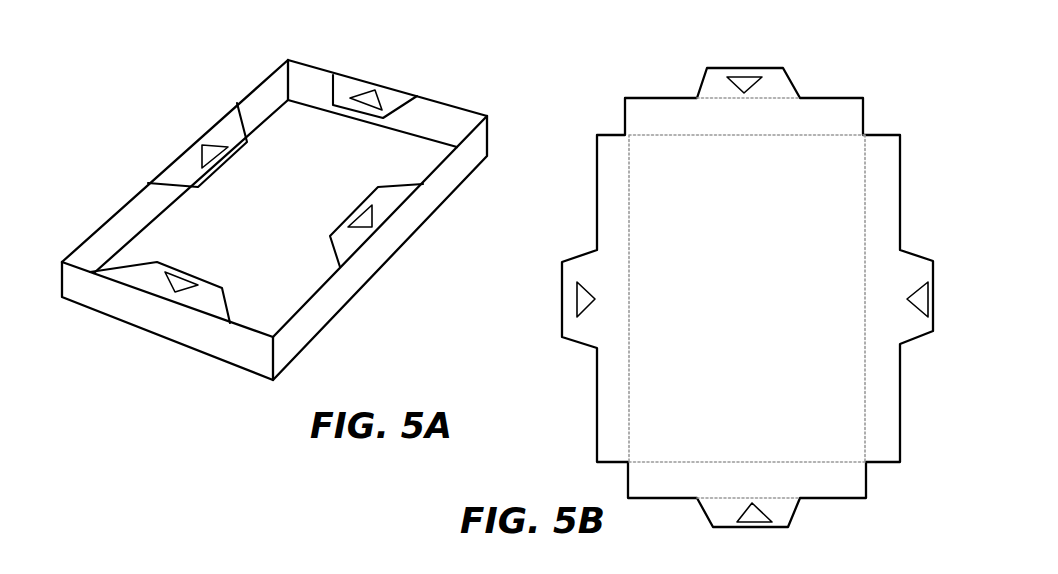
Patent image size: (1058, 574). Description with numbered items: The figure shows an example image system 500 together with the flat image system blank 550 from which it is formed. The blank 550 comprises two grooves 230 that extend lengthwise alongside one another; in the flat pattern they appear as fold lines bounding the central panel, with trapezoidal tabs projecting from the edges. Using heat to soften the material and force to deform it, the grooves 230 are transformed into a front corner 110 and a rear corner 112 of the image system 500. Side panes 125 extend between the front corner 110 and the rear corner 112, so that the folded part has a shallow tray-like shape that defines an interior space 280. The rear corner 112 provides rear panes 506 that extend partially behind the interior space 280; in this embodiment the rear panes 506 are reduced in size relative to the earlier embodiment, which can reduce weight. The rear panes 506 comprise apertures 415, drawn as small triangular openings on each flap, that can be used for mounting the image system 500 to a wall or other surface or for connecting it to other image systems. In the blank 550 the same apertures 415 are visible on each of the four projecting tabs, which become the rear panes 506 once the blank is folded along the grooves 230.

In FIG. 5A, the image system 500 is at (218, 50).
In FIG. 5B, the image system blank 550 is at (672, 50).
In FIG. 5A, the interior space 280 is at (382, 164).
In FIG. 5A, the apertures 415 is at (193, 150).
In FIG. 5B, the apertures 415 is at (745, 85).
In FIG. 5A, the rear panes 506 is at (170, 170).
In FIG. 5A, the front corner 110 is at (104, 313).
In FIG. 5A, the rear corner 112 is at (198, 309).
In FIG. 5A, the side panes 125 is at (293, 333).
In FIG. 5B, the grooves 230 is at (733, 498).